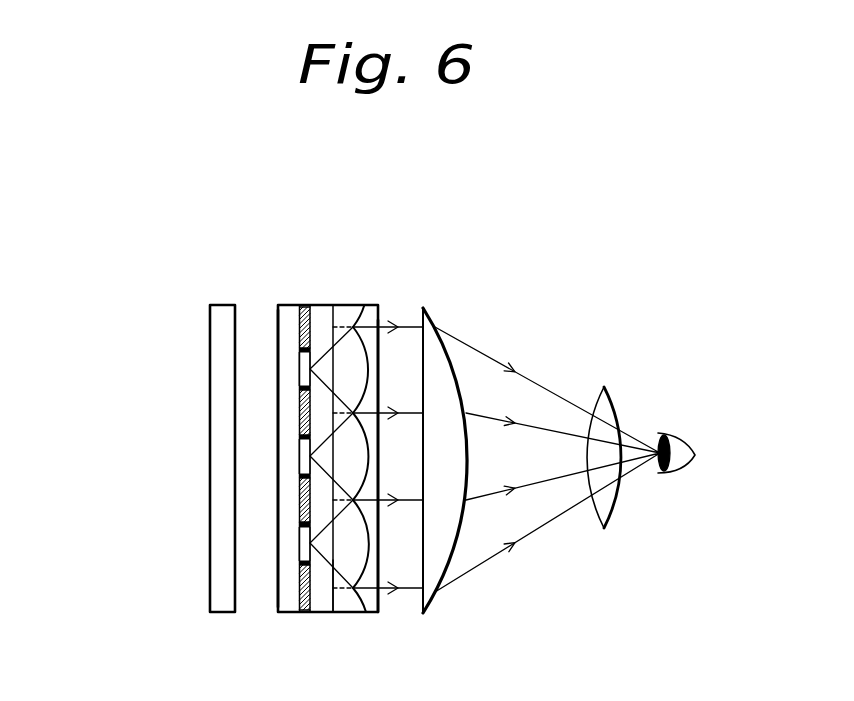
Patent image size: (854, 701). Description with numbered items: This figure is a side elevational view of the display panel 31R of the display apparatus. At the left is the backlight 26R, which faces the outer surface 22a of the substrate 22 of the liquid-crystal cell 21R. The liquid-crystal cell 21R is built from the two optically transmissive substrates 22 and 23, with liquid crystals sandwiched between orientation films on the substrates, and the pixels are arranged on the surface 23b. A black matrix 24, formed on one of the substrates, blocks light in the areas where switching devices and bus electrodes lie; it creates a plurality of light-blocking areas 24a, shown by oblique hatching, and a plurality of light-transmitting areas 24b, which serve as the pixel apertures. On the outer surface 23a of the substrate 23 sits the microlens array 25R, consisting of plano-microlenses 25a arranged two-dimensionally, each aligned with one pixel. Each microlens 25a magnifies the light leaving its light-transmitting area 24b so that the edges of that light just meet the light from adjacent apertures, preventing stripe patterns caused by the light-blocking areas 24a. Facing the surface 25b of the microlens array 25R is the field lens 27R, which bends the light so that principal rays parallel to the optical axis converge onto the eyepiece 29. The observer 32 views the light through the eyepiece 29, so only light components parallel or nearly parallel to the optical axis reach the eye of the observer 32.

The display panel 31R is at (523, 192).
The liquid-crystal cell 21R is at (358, 238).
The substrate 22 is at (288, 313).
The outer surface of substrate 22a is at (278, 322).
The black matrix 24 is at (305, 313).
The light-blocking areas 24a is at (298, 596).
The light-transmitting areas 24b is at (303, 551).
The substrate 23 is at (327, 313).
The outer surface of substrate 23a is at (337, 603).
The surface on which pixels are arranged 23b is at (298, 530).
The microlens array 25R is at (368, 323).
The microlens 25a is at (352, 318).
The surface of microlens array 25b is at (378, 607).
The field lens 27R is at (427, 313).
The backlight 26R is at (223, 461).
The eyepiece 29 is at (608, 517).
The observer 32 is at (685, 444).